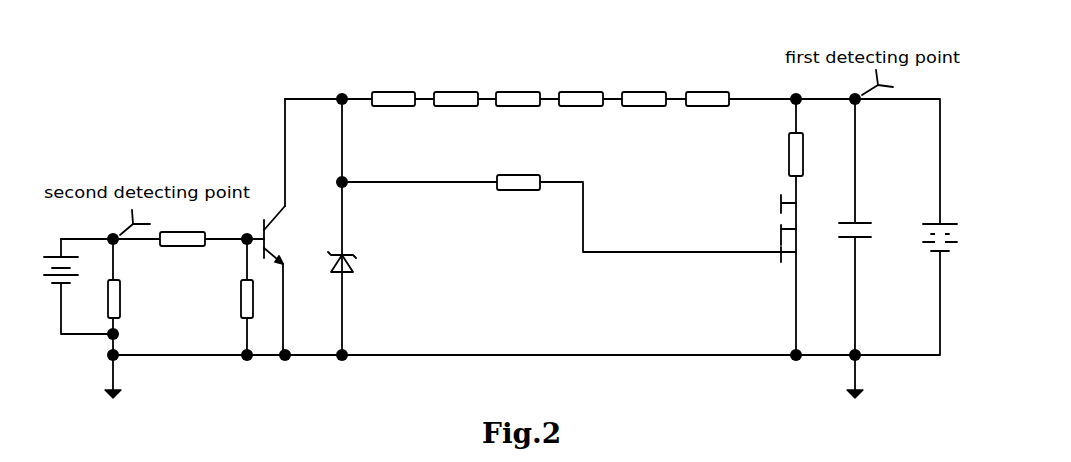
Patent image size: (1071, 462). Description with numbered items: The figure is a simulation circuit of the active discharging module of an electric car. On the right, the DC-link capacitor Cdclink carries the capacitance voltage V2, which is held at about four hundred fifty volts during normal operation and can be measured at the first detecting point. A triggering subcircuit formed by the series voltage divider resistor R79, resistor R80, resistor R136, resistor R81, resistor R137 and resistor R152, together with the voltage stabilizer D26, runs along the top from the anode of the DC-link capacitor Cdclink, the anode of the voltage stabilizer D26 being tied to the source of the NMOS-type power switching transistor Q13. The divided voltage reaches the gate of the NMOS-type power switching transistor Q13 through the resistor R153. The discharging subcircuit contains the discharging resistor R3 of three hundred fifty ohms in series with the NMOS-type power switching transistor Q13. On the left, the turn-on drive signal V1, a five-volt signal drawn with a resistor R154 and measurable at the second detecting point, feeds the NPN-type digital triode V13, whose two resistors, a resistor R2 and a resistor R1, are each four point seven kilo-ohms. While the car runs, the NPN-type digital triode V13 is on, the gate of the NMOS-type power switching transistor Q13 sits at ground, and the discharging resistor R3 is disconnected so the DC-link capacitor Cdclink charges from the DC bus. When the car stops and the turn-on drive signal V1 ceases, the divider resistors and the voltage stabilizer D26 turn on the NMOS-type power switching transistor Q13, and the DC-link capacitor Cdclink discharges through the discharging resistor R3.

The turn-on drive signal V1 is at (78, 286).
The resistor R154 is at (136, 299).
The resistor R2 is at (182, 224).
The resistor R1 is at (230, 299).
The NPN-type digital triode V13 is at (287, 280).
The voltage stabilizer D26 is at (360, 262).
The voltage divider resistor R79 is at (393, 88).
The resistor R80 is at (456, 88).
The resistor R136 is at (516, 88).
The resistor R81 is at (581, 88).
The resistor R137 is at (644, 88).
The resistor R152 is at (709, 88).
The resistor R153 is at (561, 202).
The discharging resistor R3 is at (776, 154).
The NMOS-type power switching transistor Q13 is at (764, 228).
The DC-link capacitor Cdclink is at (880, 217).
The capacitance voltage V2 is at (927, 252).